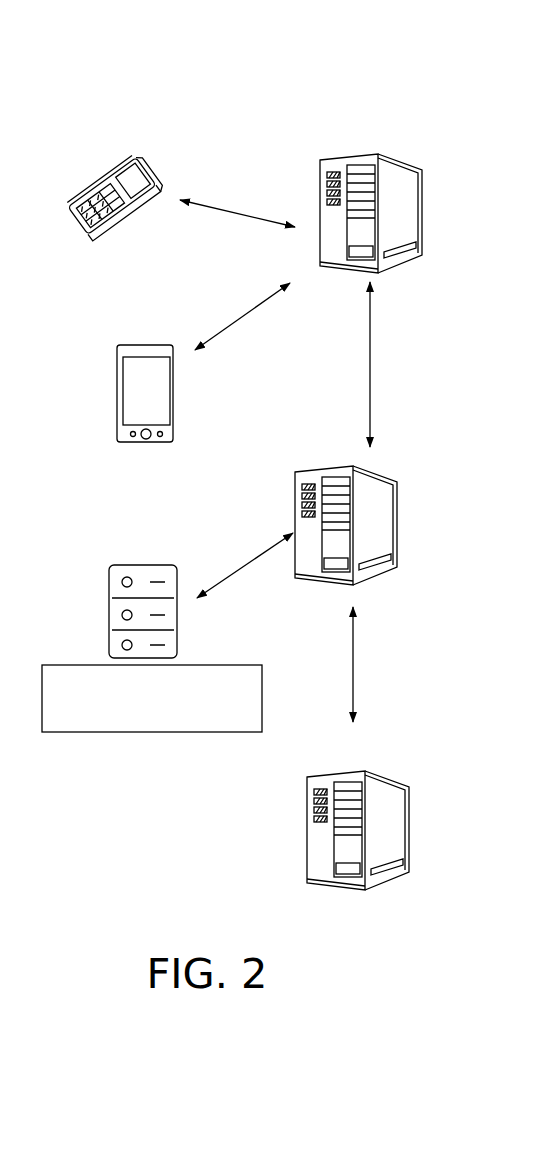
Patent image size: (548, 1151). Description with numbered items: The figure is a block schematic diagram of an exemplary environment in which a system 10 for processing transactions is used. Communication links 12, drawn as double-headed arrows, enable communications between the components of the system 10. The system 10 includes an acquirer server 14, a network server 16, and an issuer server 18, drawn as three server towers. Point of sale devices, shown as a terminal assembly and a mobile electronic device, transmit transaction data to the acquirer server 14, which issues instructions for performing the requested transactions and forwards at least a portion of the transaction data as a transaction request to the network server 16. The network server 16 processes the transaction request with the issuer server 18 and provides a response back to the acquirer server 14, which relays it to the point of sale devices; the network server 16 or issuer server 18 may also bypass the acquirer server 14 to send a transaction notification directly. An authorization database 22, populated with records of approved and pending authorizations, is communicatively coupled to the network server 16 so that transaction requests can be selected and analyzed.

The system 10 is at (250, 78).
The communication links 12 is at (295, 455).
The acquirer server 14 is at (340, 159).
The network server 16 is at (338, 470).
The issuer server 18 is at (337, 775).
The authorization database 22 is at (132, 562).